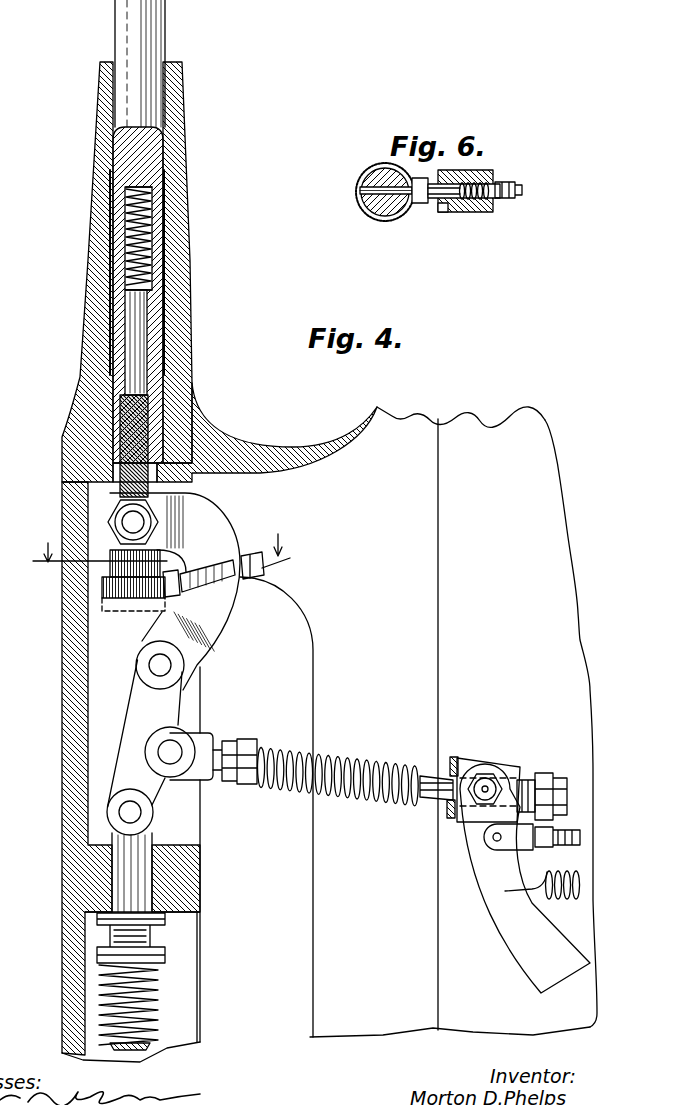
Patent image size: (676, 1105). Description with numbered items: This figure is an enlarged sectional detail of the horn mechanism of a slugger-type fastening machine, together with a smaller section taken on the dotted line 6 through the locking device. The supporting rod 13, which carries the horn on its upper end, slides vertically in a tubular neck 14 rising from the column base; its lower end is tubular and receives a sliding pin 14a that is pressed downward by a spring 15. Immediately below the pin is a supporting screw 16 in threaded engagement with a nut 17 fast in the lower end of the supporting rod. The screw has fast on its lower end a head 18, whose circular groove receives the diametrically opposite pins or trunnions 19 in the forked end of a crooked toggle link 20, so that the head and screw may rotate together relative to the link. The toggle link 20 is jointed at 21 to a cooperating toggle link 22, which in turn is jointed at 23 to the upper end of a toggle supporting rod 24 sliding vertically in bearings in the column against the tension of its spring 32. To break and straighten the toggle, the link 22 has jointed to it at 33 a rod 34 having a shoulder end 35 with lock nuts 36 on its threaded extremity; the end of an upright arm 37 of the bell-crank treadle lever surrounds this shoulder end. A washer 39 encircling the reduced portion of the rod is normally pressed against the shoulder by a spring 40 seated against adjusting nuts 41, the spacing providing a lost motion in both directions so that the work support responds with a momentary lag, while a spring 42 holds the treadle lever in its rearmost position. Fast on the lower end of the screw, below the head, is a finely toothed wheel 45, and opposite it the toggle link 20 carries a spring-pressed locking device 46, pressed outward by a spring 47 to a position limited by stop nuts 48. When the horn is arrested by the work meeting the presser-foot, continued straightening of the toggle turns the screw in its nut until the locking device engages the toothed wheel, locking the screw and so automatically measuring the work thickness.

In FIG. 4, the supporting rod 13 is at (164, 24).
In FIG. 4, the tubular neck 14 is at (181, 152).
In FIG. 4, the sliding pin 14a is at (132, 330).
In FIG. 4, the spring 15 is at (125, 212).
In FIG. 4, the supporting screw 16 is at (110, 415).
In FIG. 6, the supporting screw 16 is at (378, 208).
In FIG. 4, the nut 17 is at (162, 411).
In FIG. 4, the head 18 is at (113, 543).
In FIG. 4, the pins or trunnions 19 is at (124, 522).
In FIG. 4, the toggle link 20 is at (200, 513).
In FIG. 6, the toggle link 20 is at (484, 212).
In FIG. 4, the joint 21 is at (160, 664).
In FIG. 4, the toggle link 22 is at (143, 700).
In FIG. 4, the joint 23 is at (133, 813).
In FIG. 4, the toggle supporting rod 24 is at (123, 884).
In FIG. 4, the spring 32 is at (100, 983).
In FIG. 4, the joint 33 is at (172, 751).
In FIG. 4, the rod 34 is at (380, 759).
In FIG. 4, the shoulder end 35 is at (525, 758).
In FIG. 4, the lock nuts 36 is at (545, 775).
In FIG. 4, the upright arm 37 is at (525, 878).
In FIG. 4, the washer 39 is at (455, 757).
In FIG. 4, the spring 40 is at (328, 752).
In FIG. 4, the adjusting nuts 41 is at (244, 742).
In FIG. 4, the spring 42 is at (577, 871).
In FIG. 4, the toothed wheel 45 is at (103, 593).
In FIG. 6, the toothed wheel 45 is at (357, 198).
In FIG. 4, the locking device 46 is at (163, 600).
In FIG. 6, the locking device 46 is at (420, 203).
In FIG. 6, the spring 47 is at (468, 200).
In FIG. 4, the stop nuts 48 is at (263, 570).
In FIG. 6, the stop nuts 48 is at (518, 190).
In FIG. 4, the section line 6- 6 is at (159, 555).